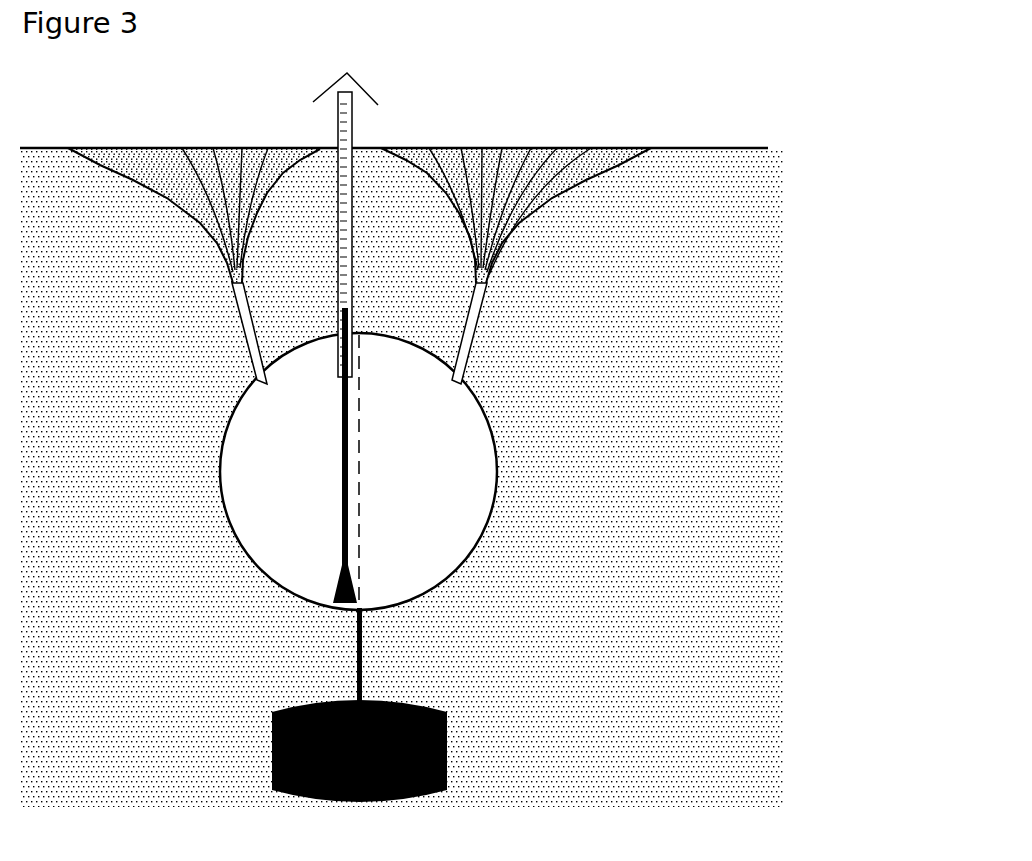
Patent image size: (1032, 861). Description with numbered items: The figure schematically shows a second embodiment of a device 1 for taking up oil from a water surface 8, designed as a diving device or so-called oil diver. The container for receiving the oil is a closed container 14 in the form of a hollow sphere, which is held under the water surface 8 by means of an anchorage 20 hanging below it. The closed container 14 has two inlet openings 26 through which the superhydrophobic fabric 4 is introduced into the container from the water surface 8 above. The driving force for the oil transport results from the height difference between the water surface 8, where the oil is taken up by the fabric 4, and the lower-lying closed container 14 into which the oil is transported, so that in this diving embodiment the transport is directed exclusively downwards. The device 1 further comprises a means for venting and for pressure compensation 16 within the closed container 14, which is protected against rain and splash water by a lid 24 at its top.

The device 1 is at (714, 299).
The superhydrophobic fabric 4 is at (202, 158).
The water surface 8 is at (723, 146).
The closed container 14 is at (500, 472).
The means for venting and for pressure compensation 16 is at (326, 539).
The anchorage 20 is at (456, 729).
The lid 24 is at (356, 82).
The inlet openings 26 is at (466, 367).